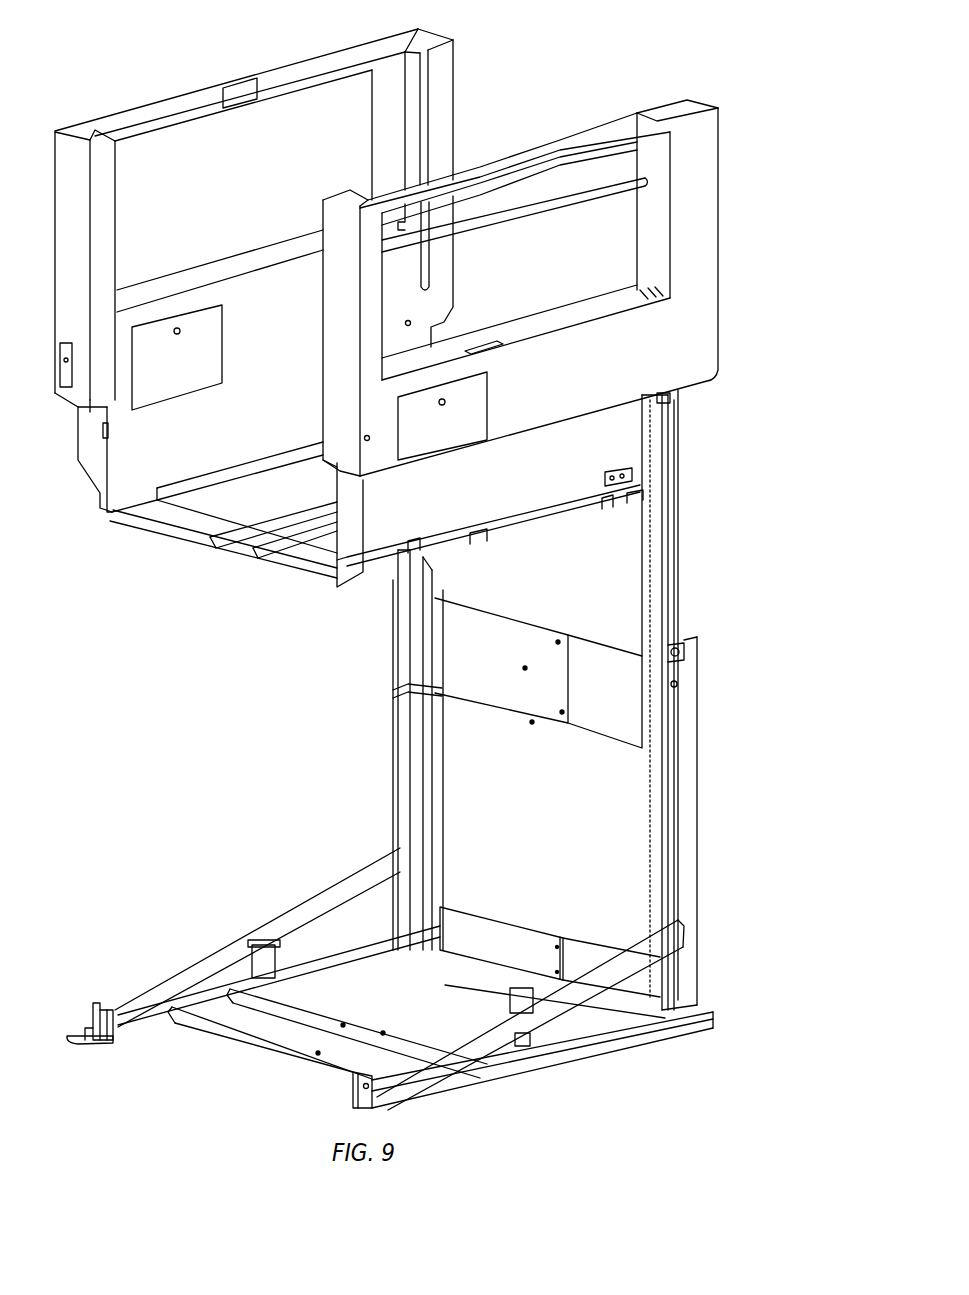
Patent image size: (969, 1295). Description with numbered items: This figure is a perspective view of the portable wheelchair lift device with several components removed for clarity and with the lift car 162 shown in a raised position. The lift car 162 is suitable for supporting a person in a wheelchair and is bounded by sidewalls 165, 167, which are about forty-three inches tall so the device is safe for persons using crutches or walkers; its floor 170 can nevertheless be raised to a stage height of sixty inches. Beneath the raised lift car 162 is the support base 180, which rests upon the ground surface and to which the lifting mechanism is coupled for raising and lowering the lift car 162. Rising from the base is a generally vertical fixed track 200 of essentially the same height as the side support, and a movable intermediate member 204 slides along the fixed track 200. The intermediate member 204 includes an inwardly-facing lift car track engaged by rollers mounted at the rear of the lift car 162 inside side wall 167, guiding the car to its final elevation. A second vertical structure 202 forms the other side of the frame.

The lift car 162 is at (544, 73).
The side wall 167 is at (212, 88).
The sidewall 165 is at (696, 284).
The floor 170 is at (182, 513).
The movable intermediate member 204 is at (681, 607).
The left column 202 is at (436, 849).
The fixed track 200 is at (691, 857).
The support base 180 is at (643, 1031).